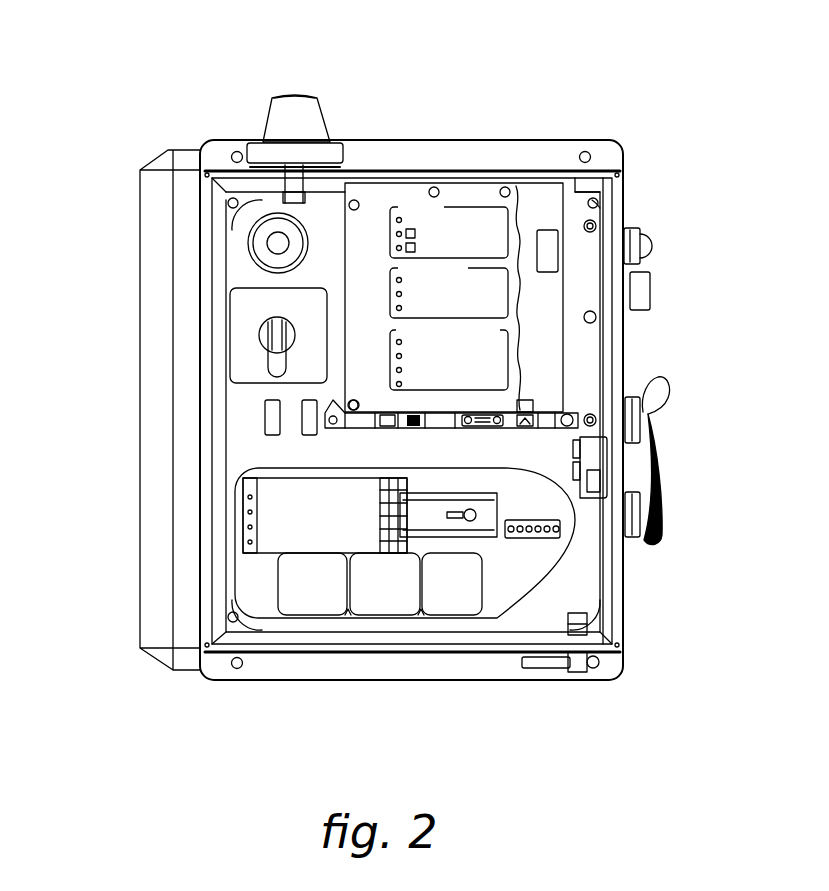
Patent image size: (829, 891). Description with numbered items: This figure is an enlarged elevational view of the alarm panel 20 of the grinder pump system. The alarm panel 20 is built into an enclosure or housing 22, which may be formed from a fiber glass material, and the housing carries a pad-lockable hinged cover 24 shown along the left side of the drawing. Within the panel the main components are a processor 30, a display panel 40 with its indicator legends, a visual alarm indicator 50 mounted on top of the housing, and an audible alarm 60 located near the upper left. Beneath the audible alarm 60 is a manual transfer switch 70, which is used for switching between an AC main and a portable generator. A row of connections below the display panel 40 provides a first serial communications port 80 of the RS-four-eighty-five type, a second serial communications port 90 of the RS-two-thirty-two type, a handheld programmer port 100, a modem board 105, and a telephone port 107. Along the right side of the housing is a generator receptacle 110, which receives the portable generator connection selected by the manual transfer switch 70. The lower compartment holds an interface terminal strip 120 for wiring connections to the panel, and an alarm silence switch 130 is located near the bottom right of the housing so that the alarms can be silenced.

The alarm panel 20 is at (162, 68).
The enclosure or housing 22 is at (273, 672).
The pad-lockable hinged cover 24 is at (165, 655).
The processor 30 is at (548, 245).
The display panel 40 is at (373, 203).
The visual alarm indicator 50 is at (315, 120).
The audible alarm 60 is at (258, 243).
The manual transfer switch 70 is at (247, 362).
The RS-485 serial communications port 80 is at (408, 430).
The RS-232 serial communications port 90 is at (478, 430).
The handheld programmer port 100 is at (564, 427).
The modem board 105 is at (524, 398).
The telephone port 107 is at (530, 432).
The generator receptacle 110 is at (632, 475).
The interface terminal strip 120 is at (497, 600).
The alarm silence switch 130 is at (570, 670).